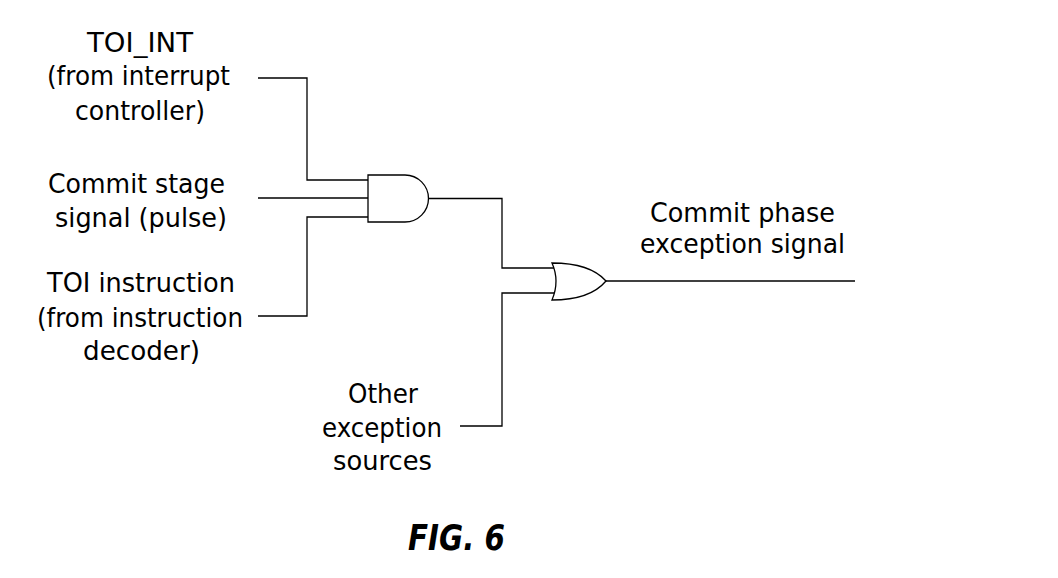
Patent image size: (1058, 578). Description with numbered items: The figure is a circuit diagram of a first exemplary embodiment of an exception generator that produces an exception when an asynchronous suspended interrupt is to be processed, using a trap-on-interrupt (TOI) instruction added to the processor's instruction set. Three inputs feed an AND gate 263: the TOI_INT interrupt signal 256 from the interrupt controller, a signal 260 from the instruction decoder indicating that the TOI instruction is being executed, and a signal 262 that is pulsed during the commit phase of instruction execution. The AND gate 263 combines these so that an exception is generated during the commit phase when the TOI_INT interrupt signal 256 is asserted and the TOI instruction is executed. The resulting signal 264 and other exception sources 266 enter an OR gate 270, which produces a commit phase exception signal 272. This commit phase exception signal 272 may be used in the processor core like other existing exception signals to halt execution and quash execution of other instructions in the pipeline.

The TOI_INT interrupt signal 256 is at (282, 77).
The commit stage signal 262 is at (282, 197).
The TOI instruction signal 260 is at (282, 314).
The AND gate 263 is at (397, 222).
The resulting signal 264 is at (502, 222).
The other exception sources 266 is at (502, 403).
The OR gate 270 is at (598, 291).
The commit phase exception signal 272 is at (783, 283).